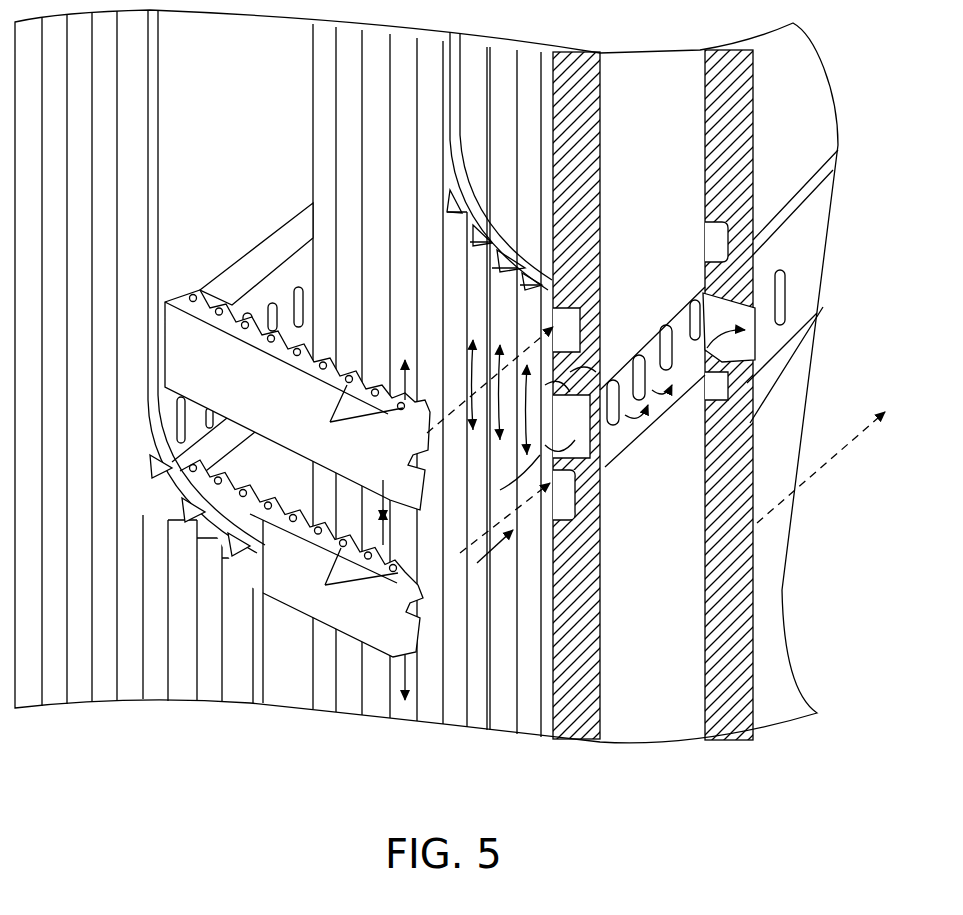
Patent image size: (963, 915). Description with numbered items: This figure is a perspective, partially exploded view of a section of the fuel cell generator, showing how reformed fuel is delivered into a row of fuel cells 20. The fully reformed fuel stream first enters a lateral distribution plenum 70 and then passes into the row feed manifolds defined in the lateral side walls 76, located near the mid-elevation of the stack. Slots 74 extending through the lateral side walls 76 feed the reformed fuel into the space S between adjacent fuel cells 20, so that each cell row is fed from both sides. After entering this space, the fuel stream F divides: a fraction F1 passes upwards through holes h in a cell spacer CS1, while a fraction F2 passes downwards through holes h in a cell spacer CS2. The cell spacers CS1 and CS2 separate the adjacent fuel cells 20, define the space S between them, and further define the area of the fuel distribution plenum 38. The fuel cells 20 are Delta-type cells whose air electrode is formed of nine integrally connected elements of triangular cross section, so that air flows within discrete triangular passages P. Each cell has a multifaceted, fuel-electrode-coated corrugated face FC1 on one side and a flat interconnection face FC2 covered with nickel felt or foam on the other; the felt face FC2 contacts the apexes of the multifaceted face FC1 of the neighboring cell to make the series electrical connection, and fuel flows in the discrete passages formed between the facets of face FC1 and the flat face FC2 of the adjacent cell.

The multifaceted fuel electrode face FC1 is at (517, 63).
The flat interconnection face FC2 is at (463, 58).
The air passages P is at (497, 253).
The fuel cells 20 is at (553, 270).
The slots 74 is at (700, 297).
The space between adjacent fuel cells S is at (595, 367).
The fuel stream F is at (423, 350).
The upward fuel fraction F1 is at (408, 395).
The downward fuel fraction F2 is at (407, 668).
The cell spacer CS1 is at (312, 425).
The cell spacer CS2 is at (312, 580).
The holes h is at (361, 502).
The fuel distribution plenum 38 is at (543, 440).
The lateral side walls 76 is at (592, 458).
The lateral distribution plenum 70 is at (670, 393).